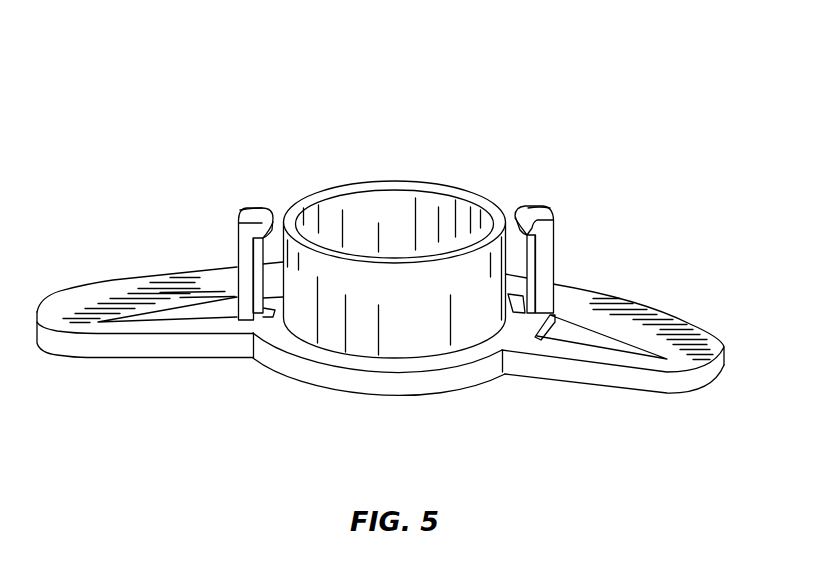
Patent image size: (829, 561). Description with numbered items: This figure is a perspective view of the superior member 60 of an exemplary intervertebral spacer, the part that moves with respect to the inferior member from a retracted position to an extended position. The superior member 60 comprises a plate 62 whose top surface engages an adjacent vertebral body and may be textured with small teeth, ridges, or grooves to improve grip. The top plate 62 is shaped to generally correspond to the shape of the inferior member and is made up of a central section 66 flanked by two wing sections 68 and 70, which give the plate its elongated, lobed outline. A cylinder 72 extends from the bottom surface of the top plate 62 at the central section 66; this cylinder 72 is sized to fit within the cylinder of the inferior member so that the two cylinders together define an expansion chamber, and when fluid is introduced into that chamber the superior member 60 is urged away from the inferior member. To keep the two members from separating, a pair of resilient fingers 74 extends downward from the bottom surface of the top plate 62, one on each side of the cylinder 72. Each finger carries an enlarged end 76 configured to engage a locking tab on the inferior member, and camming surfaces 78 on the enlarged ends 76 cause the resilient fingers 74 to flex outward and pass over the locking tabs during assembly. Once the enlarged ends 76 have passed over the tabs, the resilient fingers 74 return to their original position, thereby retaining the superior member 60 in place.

The superior member 60 is at (401, 258).
The plate 62 is at (401, 363).
The central section 66 is at (387, 383).
The wing section 68 is at (147, 342).
The wing section 70 is at (683, 401).
The cylinder 72 is at (378, 181).
The resilient fingers 74 is at (240, 255).
The enlarged ends 76 is at (240, 220).
The camming surfaces 78 is at (266, 220).